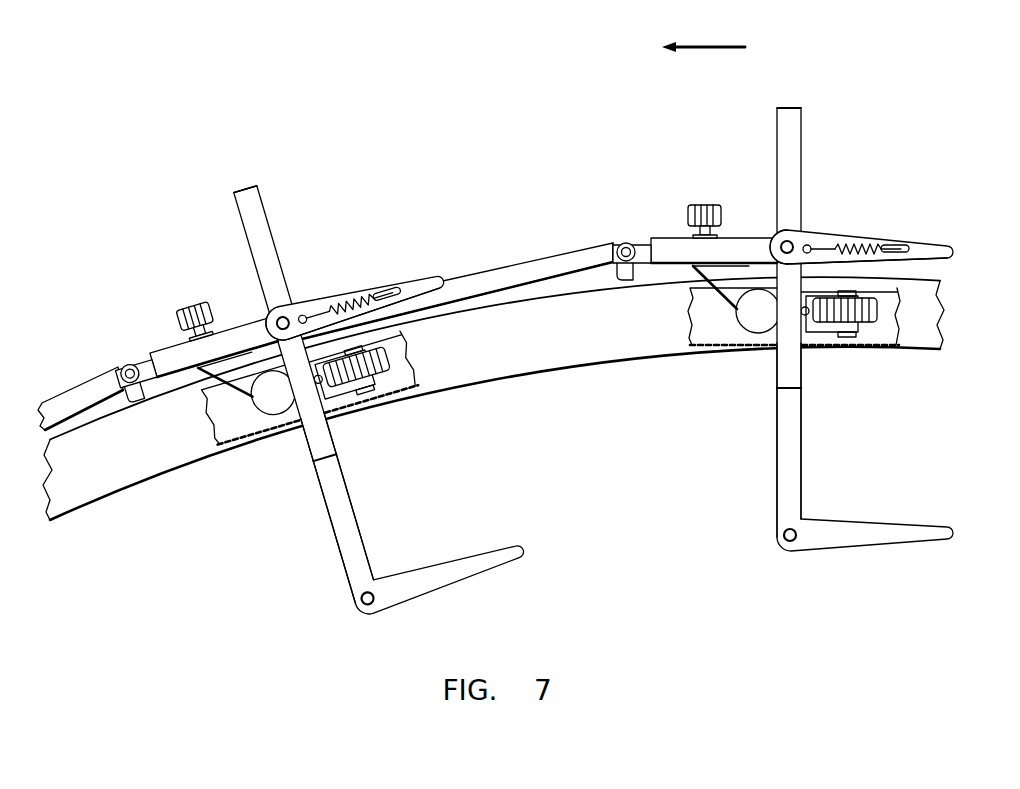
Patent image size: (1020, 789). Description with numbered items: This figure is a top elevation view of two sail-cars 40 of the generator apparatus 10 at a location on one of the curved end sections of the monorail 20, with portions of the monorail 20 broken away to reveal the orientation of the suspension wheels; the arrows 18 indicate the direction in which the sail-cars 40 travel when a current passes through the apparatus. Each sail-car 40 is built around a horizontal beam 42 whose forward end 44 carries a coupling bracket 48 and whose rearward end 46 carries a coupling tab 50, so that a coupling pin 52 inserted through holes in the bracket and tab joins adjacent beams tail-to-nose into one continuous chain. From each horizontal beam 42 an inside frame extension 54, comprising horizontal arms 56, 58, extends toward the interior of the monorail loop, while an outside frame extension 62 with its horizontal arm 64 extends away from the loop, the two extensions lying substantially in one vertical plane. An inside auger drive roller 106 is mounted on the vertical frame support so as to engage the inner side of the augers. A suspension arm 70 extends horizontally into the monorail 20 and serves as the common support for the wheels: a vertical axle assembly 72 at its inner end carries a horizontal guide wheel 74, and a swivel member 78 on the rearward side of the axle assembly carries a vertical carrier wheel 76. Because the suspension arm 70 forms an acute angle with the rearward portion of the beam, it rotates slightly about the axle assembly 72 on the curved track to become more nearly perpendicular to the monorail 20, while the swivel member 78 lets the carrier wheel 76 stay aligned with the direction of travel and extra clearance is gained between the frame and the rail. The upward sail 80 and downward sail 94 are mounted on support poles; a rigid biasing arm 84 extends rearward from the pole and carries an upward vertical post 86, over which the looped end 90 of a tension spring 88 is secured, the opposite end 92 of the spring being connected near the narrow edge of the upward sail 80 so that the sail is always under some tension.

The wind or water powered generator apparatus 10 is at (300, 58).
The arrows indicating direction of travel 18 is at (708, 47).
The monorail 20 is at (530, 338).
The sail-car 40 is at (318, 220).
The horizontal beam 42 is at (535, 268).
The forward end of horizontal beam 44 is at (160, 362).
The rearward end of horizontal beam 46 is at (112, 390).
The coupling bracket 48 is at (150, 378).
The coupling tab 50 is at (130, 388).
The coupling pin 52 is at (130, 368).
The inside frame extension 54 is at (340, 455).
The horizontal arm 56 is at (340, 410).
The horizontal arm 58 is at (348, 532).
The outside frame extension 62 is at (222, 220).
The horizontal arm 64 is at (267, 270).
The suspension arm 70 is at (225, 383).
The vertical axle assembly 72 is at (272, 392).
The horizontal guide wheel 74 is at (278, 415).
The vertical carrier wheel 76 is at (404, 386).
The swivel member 78 is at (348, 396).
The upward sail 80 is at (365, 300).
The rigid biasing arm 84 is at (284, 322).
The upward vertical post 86 is at (282, 338).
The tension spring 88 is at (400, 296).
The end of tension spring 90 is at (313, 318).
The end of tension spring 92 is at (404, 292).
The downward sail 94 is at (412, 575).
The inside auger drive roller 106 is at (196, 318).